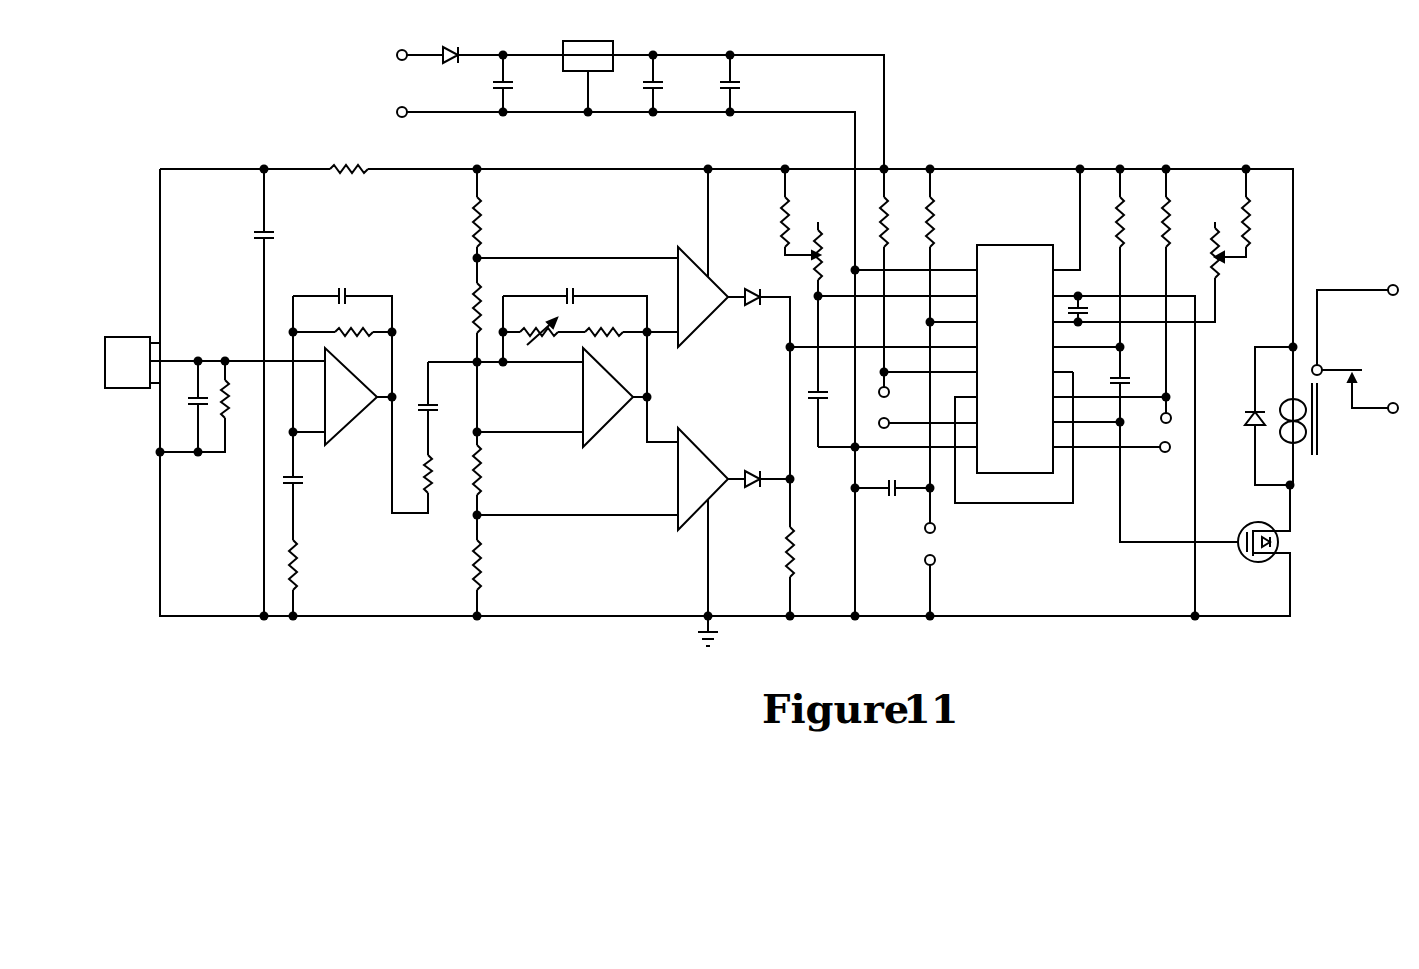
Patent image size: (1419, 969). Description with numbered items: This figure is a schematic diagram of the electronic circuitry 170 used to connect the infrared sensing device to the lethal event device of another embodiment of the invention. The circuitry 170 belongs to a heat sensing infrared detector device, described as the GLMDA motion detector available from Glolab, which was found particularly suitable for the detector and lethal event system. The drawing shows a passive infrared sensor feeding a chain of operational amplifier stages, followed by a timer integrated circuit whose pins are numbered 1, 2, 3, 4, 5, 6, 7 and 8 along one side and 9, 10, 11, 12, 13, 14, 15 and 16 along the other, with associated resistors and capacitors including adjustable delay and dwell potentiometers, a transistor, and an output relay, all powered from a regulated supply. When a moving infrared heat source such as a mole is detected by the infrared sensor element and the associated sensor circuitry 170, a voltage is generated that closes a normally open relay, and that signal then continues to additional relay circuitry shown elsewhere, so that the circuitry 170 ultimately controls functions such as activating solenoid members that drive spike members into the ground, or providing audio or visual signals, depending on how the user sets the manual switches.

The electronic circuitry 170 is at (945, 115).
The IC2 pin 1 is at (923, 270).
The IC2 pin 2 is at (904, 296).
The IC2 pin 3 is at (960, 322).
The IC2 pin 4 is at (890, 347).
The IC2 pin 5 is at (937, 372).
The IC2 pin 6 is at (1014, 437).
The IC2 pin 7 is at (940, 422).
The IC2 pin 8 is at (904, 447).
The IC2 pin 9 is at (1098, 447).
The IC2 pin 10 is at (1075, 422).
The IC2 pin 11 is at (1098, 397).
The IC2 pin 12 is at (1051, 372).
The IC2 pin 13 is at (1075, 347).
The IC2 pin 14 is at (1122, 304).
The IC2 pin 15 is at (1112, 452).
The IC2 pin 16 is at (1055, 223).